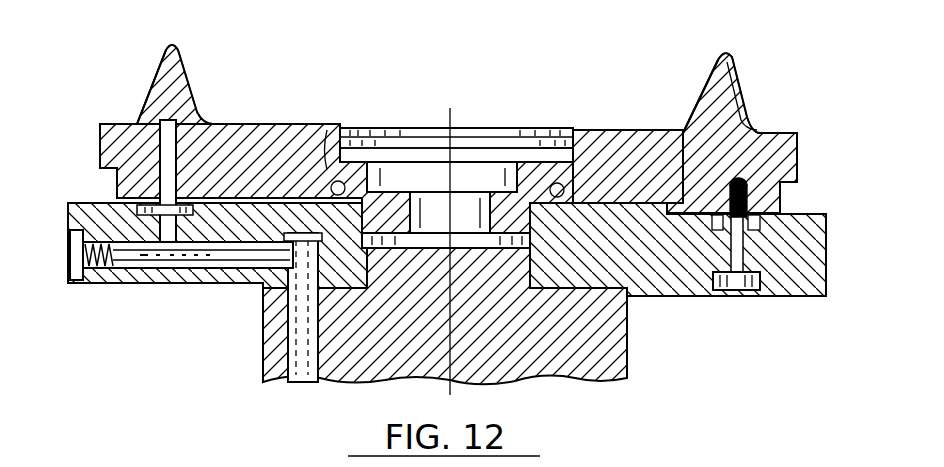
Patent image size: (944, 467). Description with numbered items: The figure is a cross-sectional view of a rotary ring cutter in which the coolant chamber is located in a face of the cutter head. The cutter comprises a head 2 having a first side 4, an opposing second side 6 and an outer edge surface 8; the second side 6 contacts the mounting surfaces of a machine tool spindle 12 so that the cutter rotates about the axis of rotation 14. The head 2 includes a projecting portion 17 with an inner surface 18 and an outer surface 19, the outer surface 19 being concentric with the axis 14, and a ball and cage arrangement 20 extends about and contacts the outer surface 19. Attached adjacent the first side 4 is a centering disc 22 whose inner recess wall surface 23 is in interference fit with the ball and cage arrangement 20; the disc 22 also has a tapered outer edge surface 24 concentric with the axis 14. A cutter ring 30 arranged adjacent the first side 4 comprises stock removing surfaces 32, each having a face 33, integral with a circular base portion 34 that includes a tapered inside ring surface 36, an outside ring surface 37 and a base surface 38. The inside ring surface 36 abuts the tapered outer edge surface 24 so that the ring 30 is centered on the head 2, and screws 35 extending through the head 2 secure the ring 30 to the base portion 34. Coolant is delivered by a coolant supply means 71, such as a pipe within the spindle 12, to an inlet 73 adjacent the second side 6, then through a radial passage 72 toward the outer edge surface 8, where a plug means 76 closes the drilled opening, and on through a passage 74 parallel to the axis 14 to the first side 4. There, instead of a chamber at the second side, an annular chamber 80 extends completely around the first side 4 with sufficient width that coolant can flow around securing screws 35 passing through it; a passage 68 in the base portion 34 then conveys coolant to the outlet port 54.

The head 2 is at (822, 251).
The first side 4 is at (812, 213).
The second side 6 is at (788, 300).
The outer edge surface 8 is at (829, 291).
The machine tool spindle 12 is at (625, 360).
The axis of rotation 14 is at (448, 118).
The projecting portion 17 is at (537, 135).
The inner surface 18 is at (508, 140).
The outer surface 19 is at (566, 137).
The ball and cage arrangement 20 is at (338, 178).
The centering disc 22 is at (292, 132).
The inner recess wall surface 23 is at (330, 135).
The tapered outer edge surface 24 is at (240, 152).
The cutter ring 30 is at (762, 96).
The stock removing surface 32 is at (712, 77).
The face 33 is at (183, 95).
The circular base portion 34 is at (733, 62).
The screw 35 is at (722, 300).
The tapered inside ring surface 36 is at (688, 130).
The outside ring surface 37 is at (797, 135).
The base surface 38 is at (797, 156).
The outlet port 54 is at (147, 127).
The passage 68 is at (100, 148).
The coolant supply means 71 is at (263, 357).
The passage 72 is at (143, 285).
The inlet 73 is at (263, 303).
The passage 74 is at (70, 223).
The plug means 76 is at (70, 262).
The annular chamber 80 is at (115, 200).